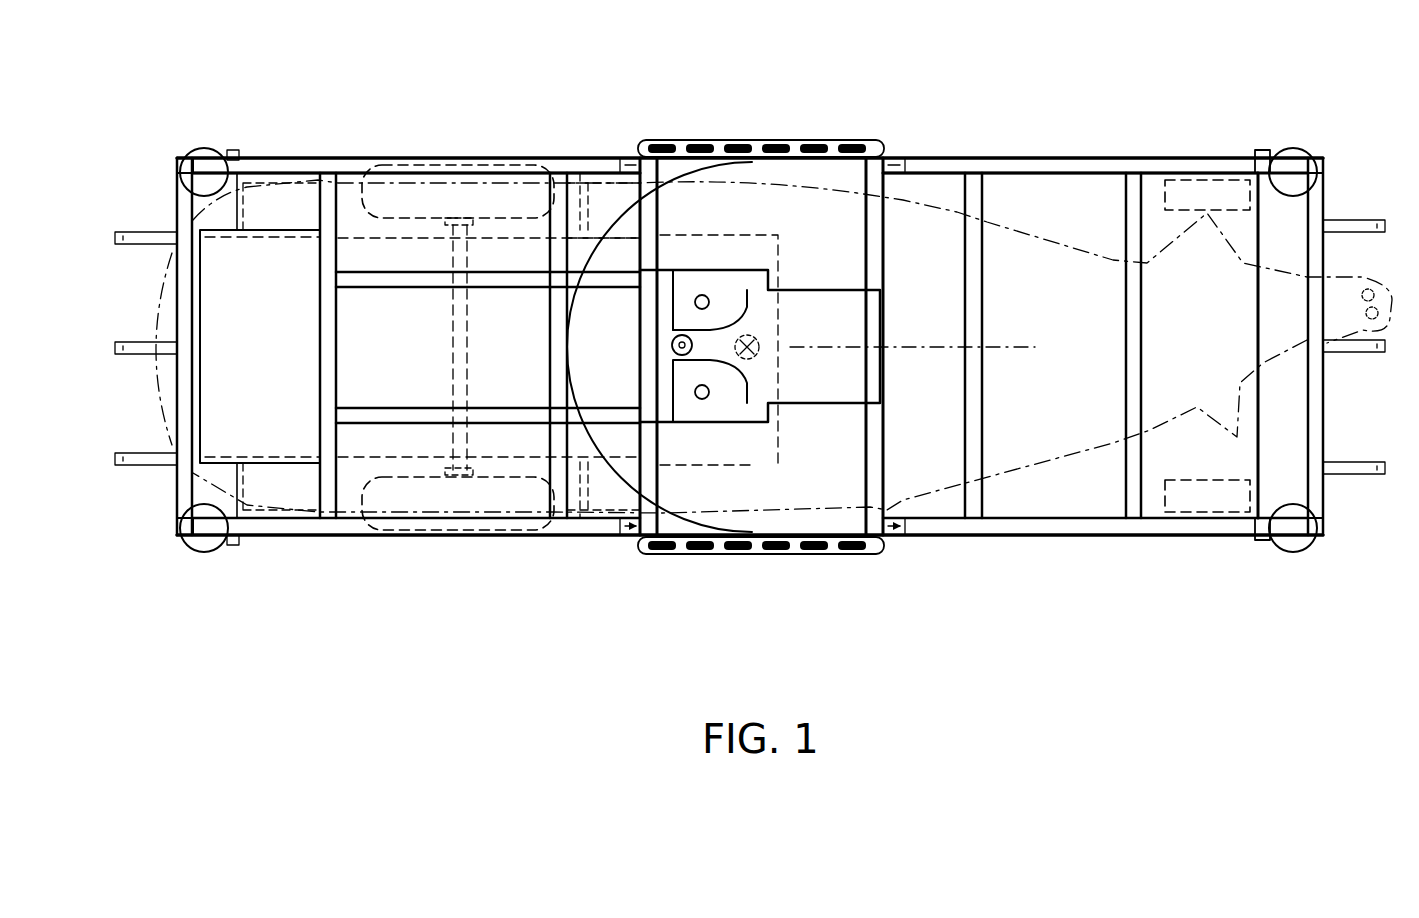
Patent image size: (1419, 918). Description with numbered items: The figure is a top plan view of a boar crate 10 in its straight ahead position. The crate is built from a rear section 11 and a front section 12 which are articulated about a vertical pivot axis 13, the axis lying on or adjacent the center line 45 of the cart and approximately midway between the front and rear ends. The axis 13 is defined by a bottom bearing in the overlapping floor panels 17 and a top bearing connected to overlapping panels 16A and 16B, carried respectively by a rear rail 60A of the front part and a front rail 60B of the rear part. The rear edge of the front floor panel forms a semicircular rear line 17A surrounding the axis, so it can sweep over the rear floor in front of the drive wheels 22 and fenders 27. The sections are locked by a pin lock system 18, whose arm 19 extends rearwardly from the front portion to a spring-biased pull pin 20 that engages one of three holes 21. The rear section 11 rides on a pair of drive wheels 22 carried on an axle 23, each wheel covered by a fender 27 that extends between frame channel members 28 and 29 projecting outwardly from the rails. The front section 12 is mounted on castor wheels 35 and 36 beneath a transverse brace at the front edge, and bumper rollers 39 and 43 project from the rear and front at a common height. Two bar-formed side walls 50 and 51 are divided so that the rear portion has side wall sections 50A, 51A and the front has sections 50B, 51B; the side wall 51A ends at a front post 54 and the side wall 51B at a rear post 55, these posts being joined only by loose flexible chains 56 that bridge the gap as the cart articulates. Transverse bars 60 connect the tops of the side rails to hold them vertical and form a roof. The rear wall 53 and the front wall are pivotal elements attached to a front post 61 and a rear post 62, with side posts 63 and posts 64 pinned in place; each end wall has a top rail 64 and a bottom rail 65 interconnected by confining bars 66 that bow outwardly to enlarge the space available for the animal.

The boar crate 10 is at (848, 88).
The rear section 11 is at (516, 100).
The front section 12 is at (1020, 105).
The vertical pivot axis 13 is at (760, 352).
The overlapping panel 16A is at (830, 305).
The overlapping panel 16B is at (750, 405).
The floor panel 17 is at (755, 146).
The semi circular rear line 17A is at (600, 248).
The pin lock system 18 is at (680, 300).
The arm 19 is at (673, 330).
The pull pin 20 is at (672, 345).
The holes 21 is at (708, 296).
The drive wheels 22 is at (403, 188).
The axle 23 is at (453, 318).
The fender 27 is at (415, 225).
The frame channel member 28 is at (280, 480).
The frame channel member 29 is at (600, 518).
The castor wheel 35 is at (1210, 512).
The castor wheel 36 is at (1222, 190).
The bumper roller 39 is at (204, 148).
The front bumper roller 43 is at (1310, 147).
The center line 45 is at (1000, 345).
The side wall 50 is at (435, 162).
The side wall section 50A is at (490, 156).
The side wall section 50B is at (1055, 156).
The side wall 51 is at (357, 532).
The side wall section 51A is at (520, 534).
The side wall section 51B is at (1090, 538).
The rear wall 53 is at (160, 478).
The front post 54 is at (622, 158).
The rear post 55 is at (900, 156).
The flexible chains 56 is at (832, 146).
The transverse bars 60 is at (325, 312).
The rear rail 60A is at (865, 210).
The front rail 60B is at (660, 475).
The front post 61 is at (1275, 148).
The rear post 62 is at (232, 148).
The side posts 63 is at (1325, 165).
The top rail 64 is at (180, 158).
The bottom rail 65 is at (180, 303).
The confining bars 66 is at (150, 232).